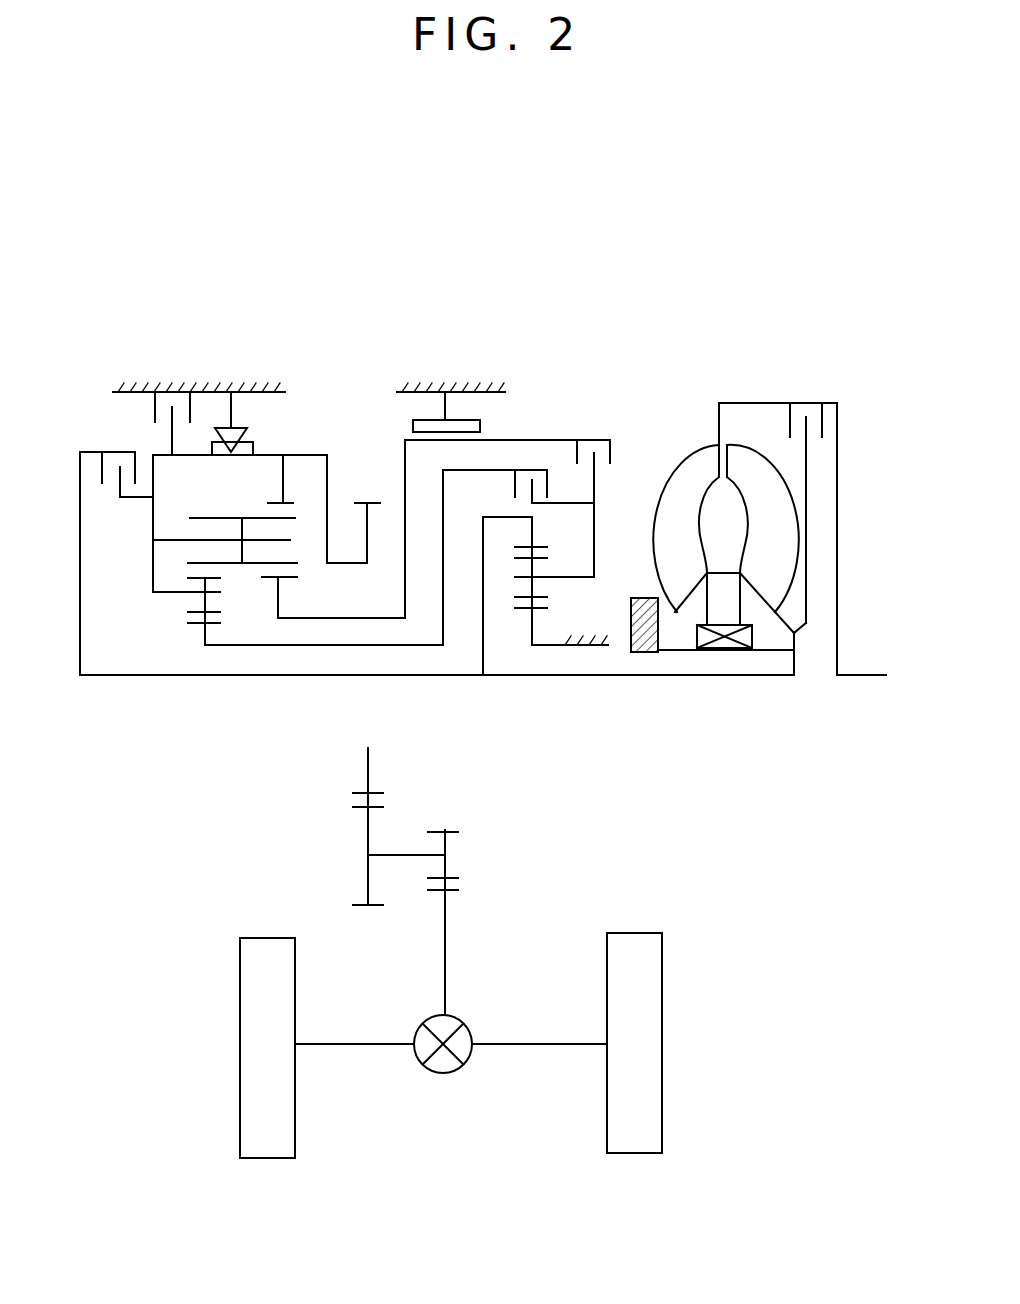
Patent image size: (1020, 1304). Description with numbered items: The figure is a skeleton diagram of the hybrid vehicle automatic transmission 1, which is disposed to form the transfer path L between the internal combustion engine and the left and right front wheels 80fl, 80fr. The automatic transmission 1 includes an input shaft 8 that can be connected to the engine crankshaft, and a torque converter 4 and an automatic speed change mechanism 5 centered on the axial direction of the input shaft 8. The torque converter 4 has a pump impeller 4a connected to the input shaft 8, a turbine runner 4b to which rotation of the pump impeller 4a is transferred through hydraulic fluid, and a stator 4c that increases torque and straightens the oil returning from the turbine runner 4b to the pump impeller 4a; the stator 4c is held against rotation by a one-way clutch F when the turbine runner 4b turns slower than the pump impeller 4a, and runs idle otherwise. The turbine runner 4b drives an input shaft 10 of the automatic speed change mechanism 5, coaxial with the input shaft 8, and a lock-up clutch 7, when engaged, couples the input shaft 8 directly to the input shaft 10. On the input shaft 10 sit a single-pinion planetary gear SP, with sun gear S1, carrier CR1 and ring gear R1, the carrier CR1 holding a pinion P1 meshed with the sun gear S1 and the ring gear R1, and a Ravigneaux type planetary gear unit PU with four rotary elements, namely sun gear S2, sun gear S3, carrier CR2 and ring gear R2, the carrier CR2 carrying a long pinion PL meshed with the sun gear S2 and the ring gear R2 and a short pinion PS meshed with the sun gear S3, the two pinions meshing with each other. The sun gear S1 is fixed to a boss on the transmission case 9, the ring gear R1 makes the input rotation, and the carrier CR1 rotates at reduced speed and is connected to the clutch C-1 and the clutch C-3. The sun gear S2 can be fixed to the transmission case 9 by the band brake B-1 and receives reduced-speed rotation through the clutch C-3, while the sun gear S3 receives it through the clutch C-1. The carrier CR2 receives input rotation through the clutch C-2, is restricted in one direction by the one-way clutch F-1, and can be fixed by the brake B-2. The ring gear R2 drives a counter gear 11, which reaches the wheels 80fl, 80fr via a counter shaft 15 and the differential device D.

The automatic transmission 1 is at (493, 202).
The torque converter 4 is at (729, 497).
The pump impeller 4a is at (695, 460).
The turbine runner 4b is at (752, 460).
The stator 4c is at (737, 608).
The automatic speed change mechanism 5 is at (360, 483).
The lock-up clutch 7 is at (809, 401).
The input shaft 8 is at (868, 680).
The transmission case 9 is at (487, 393).
The input shaft 10 is at (688, 678).
The counter gear 11 is at (365, 500).
The counter shaft 15 is at (402, 853).
The transfer path L is at (617, 692).
The one-way clutch F is at (726, 650).
The differential device D is at (453, 1017).
The front wheel 80fl is at (238, 972).
The front wheel 80fr is at (663, 968).
The brake B-1 is at (451, 393).
The brake B-2 is at (199, 405).
The clutch C-1 is at (518, 545).
The clutch C-2 is at (116, 551).
The clutch C-3 is at (591, 495).
The one-way clutch F-1 is at (248, 423).
The carrier CR1 is at (600, 558).
The carrier CR2 is at (148, 548).
The ring gear R1 is at (535, 547).
The ring gear R2 is at (283, 503).
The sun gear S1 is at (523, 610).
The sun gear S2 is at (283, 579).
The sun gear S3 is at (200, 628).
The pinion P1 is at (543, 592).
The long pinion PL is at (279, 521).
The short pinion PS is at (195, 605).
The planetary gear unit PU is at (266, 523).
The planetary gear SP is at (562, 578).